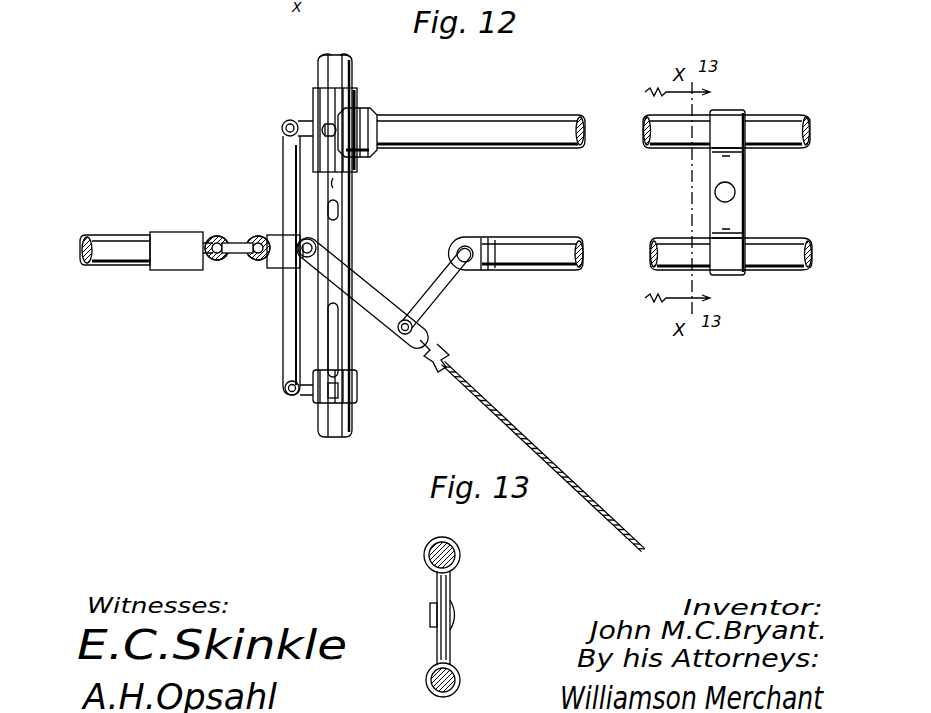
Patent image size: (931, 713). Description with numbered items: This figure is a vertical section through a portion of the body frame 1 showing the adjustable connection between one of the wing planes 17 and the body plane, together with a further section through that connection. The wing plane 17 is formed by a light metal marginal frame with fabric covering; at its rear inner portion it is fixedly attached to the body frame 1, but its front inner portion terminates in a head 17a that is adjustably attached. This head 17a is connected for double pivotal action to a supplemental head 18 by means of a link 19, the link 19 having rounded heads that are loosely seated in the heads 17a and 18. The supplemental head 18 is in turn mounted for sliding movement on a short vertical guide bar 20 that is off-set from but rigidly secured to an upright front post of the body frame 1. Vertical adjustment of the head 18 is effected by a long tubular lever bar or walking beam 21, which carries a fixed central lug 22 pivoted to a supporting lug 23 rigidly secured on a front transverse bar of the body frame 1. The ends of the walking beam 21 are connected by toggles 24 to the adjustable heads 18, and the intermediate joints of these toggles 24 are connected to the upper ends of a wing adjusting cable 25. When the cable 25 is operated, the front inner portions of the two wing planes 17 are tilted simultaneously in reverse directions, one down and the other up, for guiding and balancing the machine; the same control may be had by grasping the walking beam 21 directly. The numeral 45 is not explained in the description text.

In FIG. 12, the body frame 1 is at (332, 78).
In FIG. 12, the wing plane 17 is at (106, 266).
In FIG. 12, the head 17a is at (168, 250).
In FIG. 12, the supplemental head 18 is at (276, 258).
In FIG. 12, the link 19 is at (240, 252).
In FIG. 12, the guide bar 20 is at (290, 356).
In FIG. 12, the walking beam 21 is at (573, 258).
In FIG. 13, the walking beam 21 is at (440, 680).
In FIG. 12, the central lug 22 is at (740, 132).
In FIG. 13, the central lug 22 is at (450, 643).
In FIG. 13, the supporting lug 23 is at (457, 558).
In FIG. 12, the toggle 24 is at (432, 290).
In FIG. 12, the wing adjusting cable 25 is at (553, 457).
In FIG. 12, the slot 45 is at (350, 204).